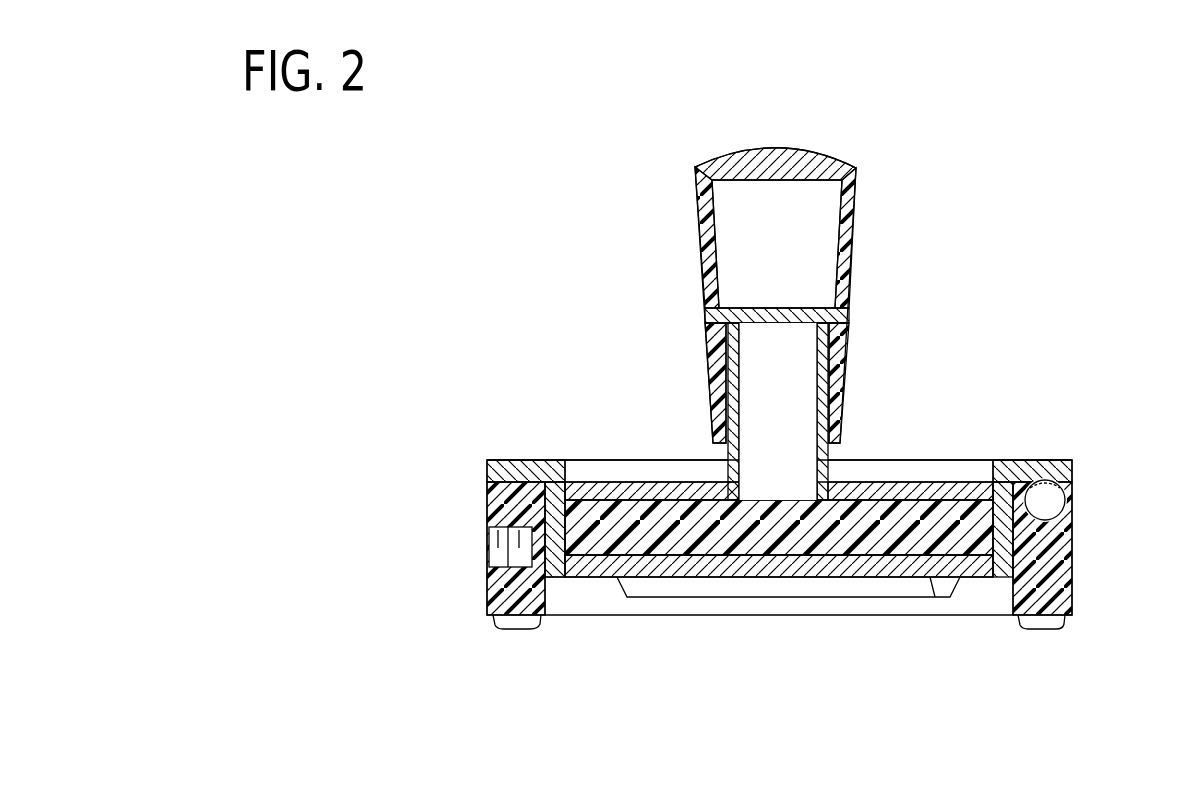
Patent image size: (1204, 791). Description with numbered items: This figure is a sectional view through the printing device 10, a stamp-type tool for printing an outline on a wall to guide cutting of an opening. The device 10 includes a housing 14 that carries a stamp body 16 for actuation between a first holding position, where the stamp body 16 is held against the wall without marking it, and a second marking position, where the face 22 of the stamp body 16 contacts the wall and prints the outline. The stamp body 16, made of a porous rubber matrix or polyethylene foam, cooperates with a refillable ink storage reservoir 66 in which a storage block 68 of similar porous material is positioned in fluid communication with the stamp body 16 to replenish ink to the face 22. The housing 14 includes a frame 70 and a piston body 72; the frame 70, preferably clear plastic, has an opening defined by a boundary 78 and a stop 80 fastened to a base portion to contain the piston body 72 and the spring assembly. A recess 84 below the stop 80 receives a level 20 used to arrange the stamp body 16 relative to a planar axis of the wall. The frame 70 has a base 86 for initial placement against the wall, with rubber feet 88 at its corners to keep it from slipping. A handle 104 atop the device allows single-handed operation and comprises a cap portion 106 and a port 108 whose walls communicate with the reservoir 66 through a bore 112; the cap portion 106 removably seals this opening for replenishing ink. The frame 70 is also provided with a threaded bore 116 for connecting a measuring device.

The printing device 10 is at (340, 290).
The housing 14 is at (487, 512).
The stamp body 16 is at (607, 580).
The level 20 is at (1072, 503).
The face 22 is at (937, 585).
The refillable ink storage reservoir 66 is at (598, 510).
The storage block 68 is at (928, 492).
The frame 70 is at (487, 565).
The piston body 72 is at (1003, 580).
The boundary 78 is at (568, 588).
The stop 80 is at (527, 458).
The recess 84 is at (1060, 516).
The base 86 is at (540, 600).
The feet 88 is at (510, 632).
The handle 104 is at (855, 208).
The cap portion 106 is at (850, 282).
The port 108 is at (833, 453).
The stem bore 112 is at (770, 443).
The threaded bore 116 is at (495, 548).